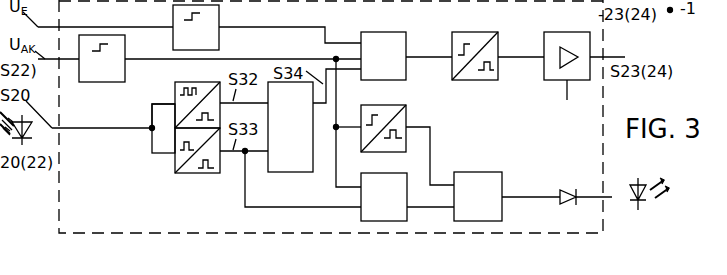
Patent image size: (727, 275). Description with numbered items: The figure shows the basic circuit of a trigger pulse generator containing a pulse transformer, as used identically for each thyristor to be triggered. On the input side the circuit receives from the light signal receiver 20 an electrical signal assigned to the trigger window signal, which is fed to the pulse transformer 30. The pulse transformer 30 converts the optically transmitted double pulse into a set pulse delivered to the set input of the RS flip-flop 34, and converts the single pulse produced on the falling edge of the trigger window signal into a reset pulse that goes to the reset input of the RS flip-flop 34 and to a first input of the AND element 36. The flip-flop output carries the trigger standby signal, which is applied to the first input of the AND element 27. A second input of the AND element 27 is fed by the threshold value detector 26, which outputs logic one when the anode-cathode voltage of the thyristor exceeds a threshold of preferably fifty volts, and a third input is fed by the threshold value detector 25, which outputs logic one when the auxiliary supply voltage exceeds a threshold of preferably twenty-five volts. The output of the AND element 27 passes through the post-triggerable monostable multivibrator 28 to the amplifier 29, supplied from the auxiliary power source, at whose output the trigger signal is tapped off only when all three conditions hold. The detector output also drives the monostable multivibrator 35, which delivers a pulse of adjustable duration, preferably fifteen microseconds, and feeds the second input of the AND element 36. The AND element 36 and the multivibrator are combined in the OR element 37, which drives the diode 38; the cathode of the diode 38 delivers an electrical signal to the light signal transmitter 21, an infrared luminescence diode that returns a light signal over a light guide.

The light signal receiver 20 is at (16, 128).
The light signal transmitter 21 is at (630, 204).
The threshold value detector 25 is at (219, 9).
The threshold value detector 26 is at (125, 40).
The AND element 27 is at (385, 32).
The monostable multivibrator 28 is at (475, 32).
The amplifier 29 is at (563, 30).
The pulse transformer 30 is at (200, 173).
The RS flip-flop 34 is at (300, 172).
The monostable multivibrator 35 is at (408, 104).
The AND element 36 is at (407, 182).
The OR element 37 is at (476, 172).
The diode 38 is at (572, 190).